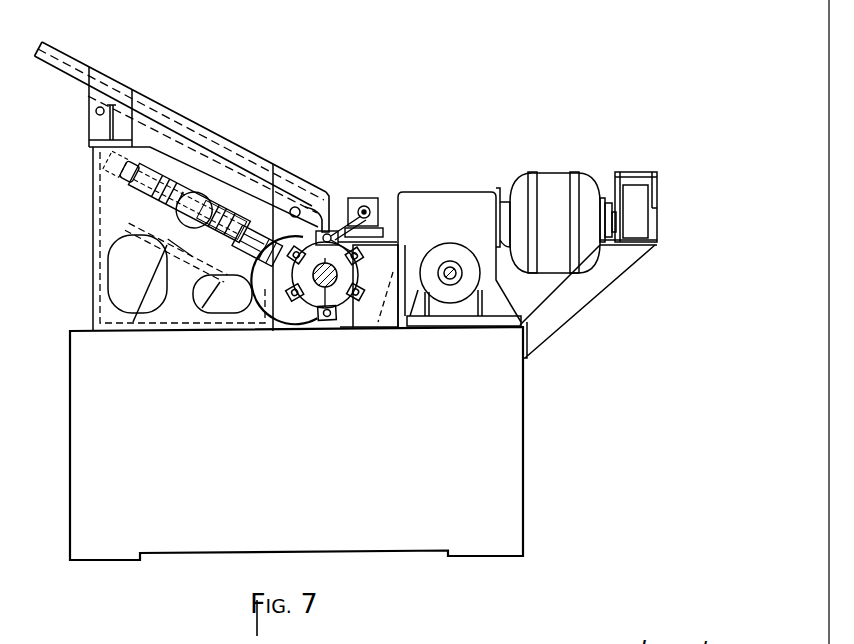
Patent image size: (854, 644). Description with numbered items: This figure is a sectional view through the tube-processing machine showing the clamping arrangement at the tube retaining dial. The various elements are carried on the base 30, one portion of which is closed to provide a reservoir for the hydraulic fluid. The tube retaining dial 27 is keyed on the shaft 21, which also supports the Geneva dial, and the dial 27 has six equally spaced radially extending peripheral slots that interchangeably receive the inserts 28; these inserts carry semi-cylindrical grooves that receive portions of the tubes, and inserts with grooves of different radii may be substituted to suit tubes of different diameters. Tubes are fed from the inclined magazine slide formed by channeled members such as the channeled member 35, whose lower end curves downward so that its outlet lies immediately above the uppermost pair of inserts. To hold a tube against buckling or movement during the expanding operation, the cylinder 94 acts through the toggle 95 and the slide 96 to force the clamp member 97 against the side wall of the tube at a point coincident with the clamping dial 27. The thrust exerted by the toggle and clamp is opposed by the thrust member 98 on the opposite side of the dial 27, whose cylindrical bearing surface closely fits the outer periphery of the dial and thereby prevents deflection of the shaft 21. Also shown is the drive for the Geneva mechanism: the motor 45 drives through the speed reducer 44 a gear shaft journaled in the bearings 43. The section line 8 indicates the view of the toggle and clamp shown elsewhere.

The section line 8- 8 is at (89, 147).
The shaft 21 is at (326, 290).
The tube retaining dial 27 is at (310, 298).
The insert 28 is at (375, 286).
The base 30 is at (283, 470).
The channeled member 35 is at (62, 50).
The bearing 43 is at (462, 253).
The speed reducer 44 is at (463, 192).
The motor 45 is at (576, 153).
The cylinder 94 is at (208, 183).
The toggle 95 is at (194, 210).
The slide 96 is at (222, 219).
The clamp member 97 is at (257, 245).
The thrust member 98 is at (358, 313).